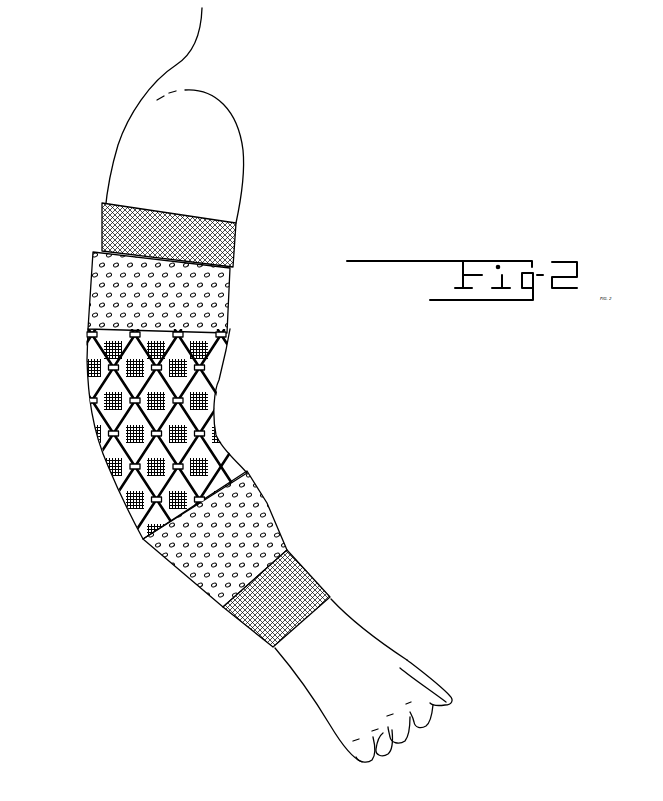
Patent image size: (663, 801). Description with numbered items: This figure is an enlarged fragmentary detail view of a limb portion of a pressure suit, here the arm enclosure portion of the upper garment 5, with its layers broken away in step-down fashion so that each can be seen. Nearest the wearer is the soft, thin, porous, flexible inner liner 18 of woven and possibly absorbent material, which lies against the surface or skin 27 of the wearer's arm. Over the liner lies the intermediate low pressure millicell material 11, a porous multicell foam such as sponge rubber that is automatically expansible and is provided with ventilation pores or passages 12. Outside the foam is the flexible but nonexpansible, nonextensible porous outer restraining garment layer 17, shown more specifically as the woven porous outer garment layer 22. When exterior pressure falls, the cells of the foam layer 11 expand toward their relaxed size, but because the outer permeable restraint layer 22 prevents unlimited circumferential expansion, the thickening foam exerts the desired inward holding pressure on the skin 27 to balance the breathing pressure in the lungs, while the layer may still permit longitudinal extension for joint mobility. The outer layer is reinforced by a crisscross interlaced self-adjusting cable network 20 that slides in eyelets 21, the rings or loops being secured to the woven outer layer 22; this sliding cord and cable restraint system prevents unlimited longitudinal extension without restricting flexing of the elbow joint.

The upper garment 5 is at (96, 464).
The low pressure millicell material 11 is at (115, 279).
The ventilation pores 12 is at (218, 302).
The outer restraining garment layer 17 is at (177, 445).
The inner liner 18 is at (103, 222).
The cable network 20 is at (221, 395).
The eyelets 21 is at (95, 352).
The woven porous outer garment layer 22 is at (220, 428).
The skin 27 is at (118, 187).